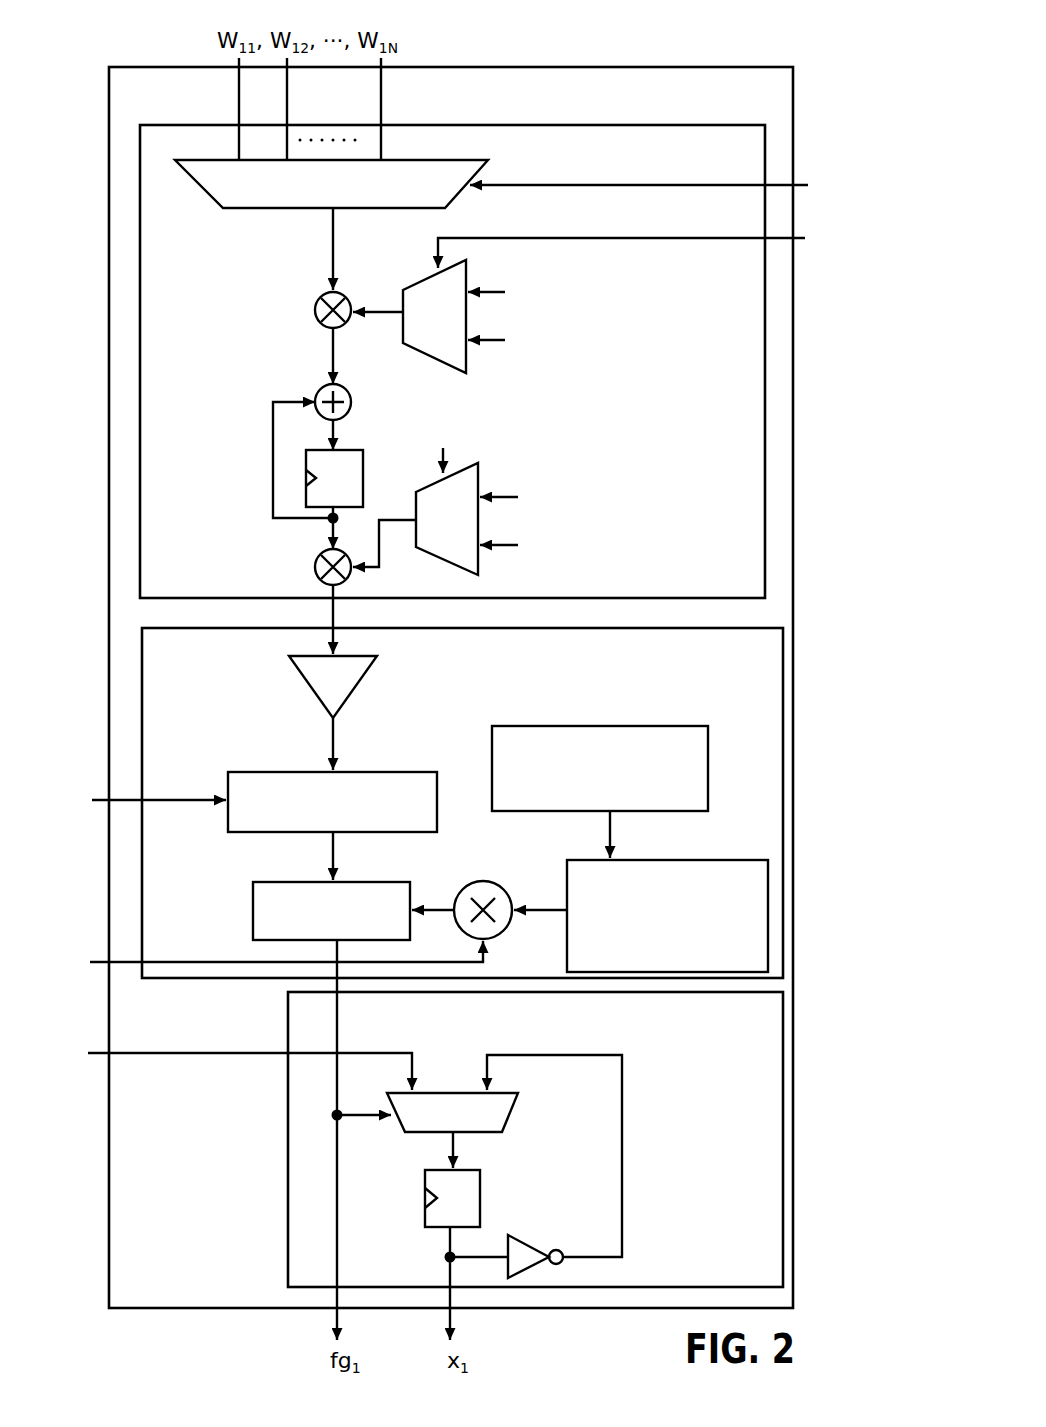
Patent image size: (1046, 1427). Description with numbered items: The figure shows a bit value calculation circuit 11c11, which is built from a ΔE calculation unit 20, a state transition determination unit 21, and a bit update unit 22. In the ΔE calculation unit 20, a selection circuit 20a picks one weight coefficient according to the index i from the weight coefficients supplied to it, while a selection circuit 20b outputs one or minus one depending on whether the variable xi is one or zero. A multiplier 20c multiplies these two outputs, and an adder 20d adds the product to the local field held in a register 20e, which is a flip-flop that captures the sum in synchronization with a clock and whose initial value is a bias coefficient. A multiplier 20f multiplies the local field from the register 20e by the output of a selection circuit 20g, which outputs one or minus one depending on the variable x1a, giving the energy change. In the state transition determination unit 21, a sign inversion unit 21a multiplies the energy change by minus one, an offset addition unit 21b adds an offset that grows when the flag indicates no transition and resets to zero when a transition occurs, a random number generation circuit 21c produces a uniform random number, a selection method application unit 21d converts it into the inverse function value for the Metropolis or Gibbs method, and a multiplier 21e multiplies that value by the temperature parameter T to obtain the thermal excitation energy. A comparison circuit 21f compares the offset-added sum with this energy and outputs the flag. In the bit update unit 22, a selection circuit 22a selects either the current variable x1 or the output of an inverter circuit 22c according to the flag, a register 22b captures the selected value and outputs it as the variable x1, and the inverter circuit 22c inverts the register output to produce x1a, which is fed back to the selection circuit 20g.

The bit value calculation circuit 11c11 is at (659, 67).
The ΔE calculation unit 20 is at (765, 143).
The selection circuit 20a is at (210, 197).
The selection circuit 20b is at (428, 275).
The multiplier 20c is at (315, 306).
The adder 20d is at (318, 392).
The register 20e is at (306, 465).
The multiplier 20f is at (318, 563).
The selection circuit 20g is at (470, 463).
The state transition determination unit 21 is at (783, 650).
The sign inversion unit 21a is at (291, 680).
The offset addition unit 21b is at (397, 768).
The random number generation circuit 21c is at (645, 725).
The selection method application unit 21d is at (685, 860).
The multiplier 21e is at (482, 881).
The comparison circuit 21f is at (356, 880).
The bit update unit 22 is at (783, 1020).
The selection circuit 22a is at (512, 1120).
The register 22b is at (480, 1180).
The inverter circuit 22c is at (535, 1245).